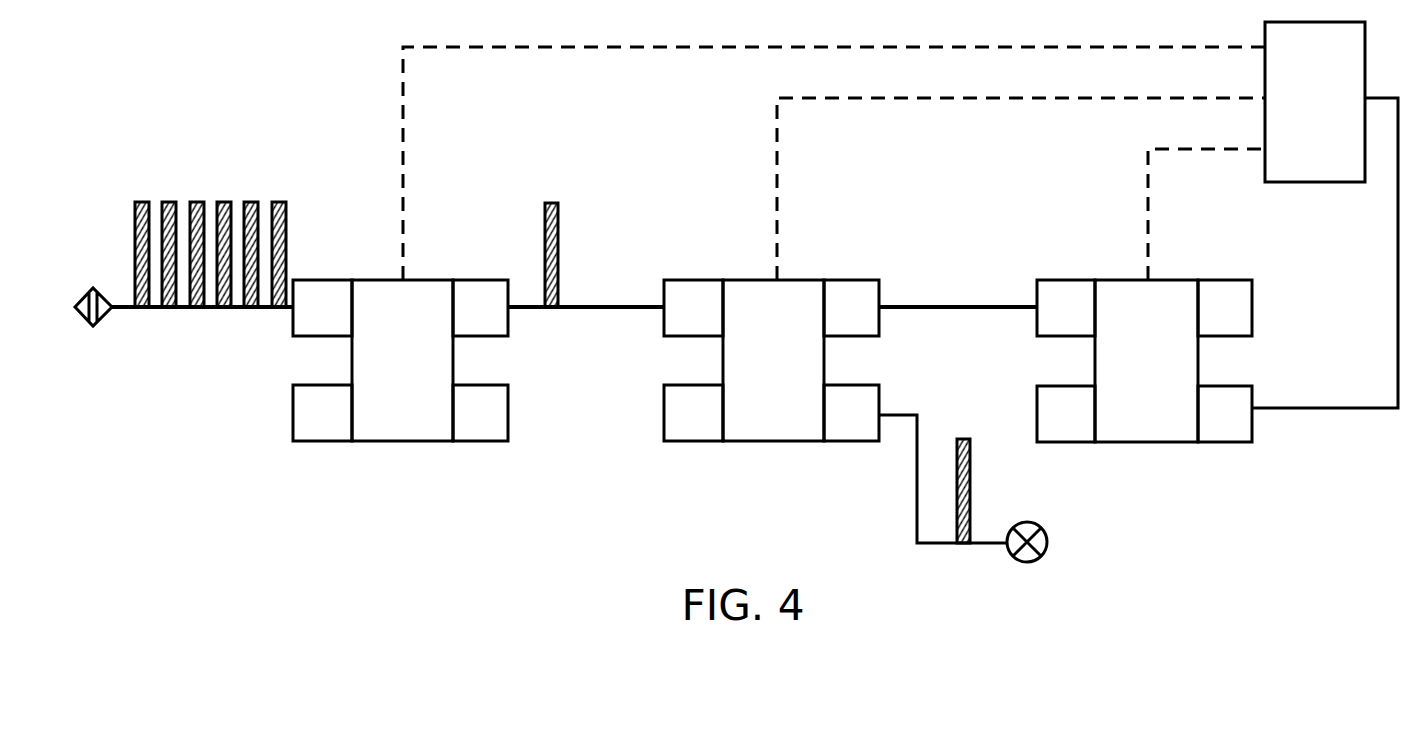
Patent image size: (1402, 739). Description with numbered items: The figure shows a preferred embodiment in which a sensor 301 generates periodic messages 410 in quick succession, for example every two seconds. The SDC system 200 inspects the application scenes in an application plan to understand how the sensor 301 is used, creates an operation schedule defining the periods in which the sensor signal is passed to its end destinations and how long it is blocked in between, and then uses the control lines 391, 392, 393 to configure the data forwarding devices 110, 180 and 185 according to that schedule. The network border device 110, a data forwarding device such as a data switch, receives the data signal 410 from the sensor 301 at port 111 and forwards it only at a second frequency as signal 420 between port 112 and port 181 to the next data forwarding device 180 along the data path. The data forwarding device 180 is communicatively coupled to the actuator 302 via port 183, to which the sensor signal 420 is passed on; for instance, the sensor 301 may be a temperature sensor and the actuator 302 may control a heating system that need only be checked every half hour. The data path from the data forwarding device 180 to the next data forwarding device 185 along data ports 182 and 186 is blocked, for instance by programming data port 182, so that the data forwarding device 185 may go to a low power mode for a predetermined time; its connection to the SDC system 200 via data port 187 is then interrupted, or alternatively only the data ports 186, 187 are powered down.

The network border device 110 is at (400, 360).
The port 111 is at (322, 308).
The port 112 is at (480, 308).
The data forwarding device 180 is at (744, 360).
The port 181 is at (693, 308).
The data port 182 is at (930, 308).
The port 183 is at (915, 464).
The data forwarding device 185 is at (1144, 361).
The data port 186 is at (1066, 308).
The data port 187 is at (1298, 270).
The SDC system 200 is at (1315, 102).
The sensor 301 is at (91, 326).
The actuator 302 is at (1003, 518).
The control line 391 is at (822, 163).
The control line 392 is at (1010, 189).
The control line 393 is at (1196, 214).
The periodic messages 410 is at (202, 278).
The signal 420 is at (586, 277).